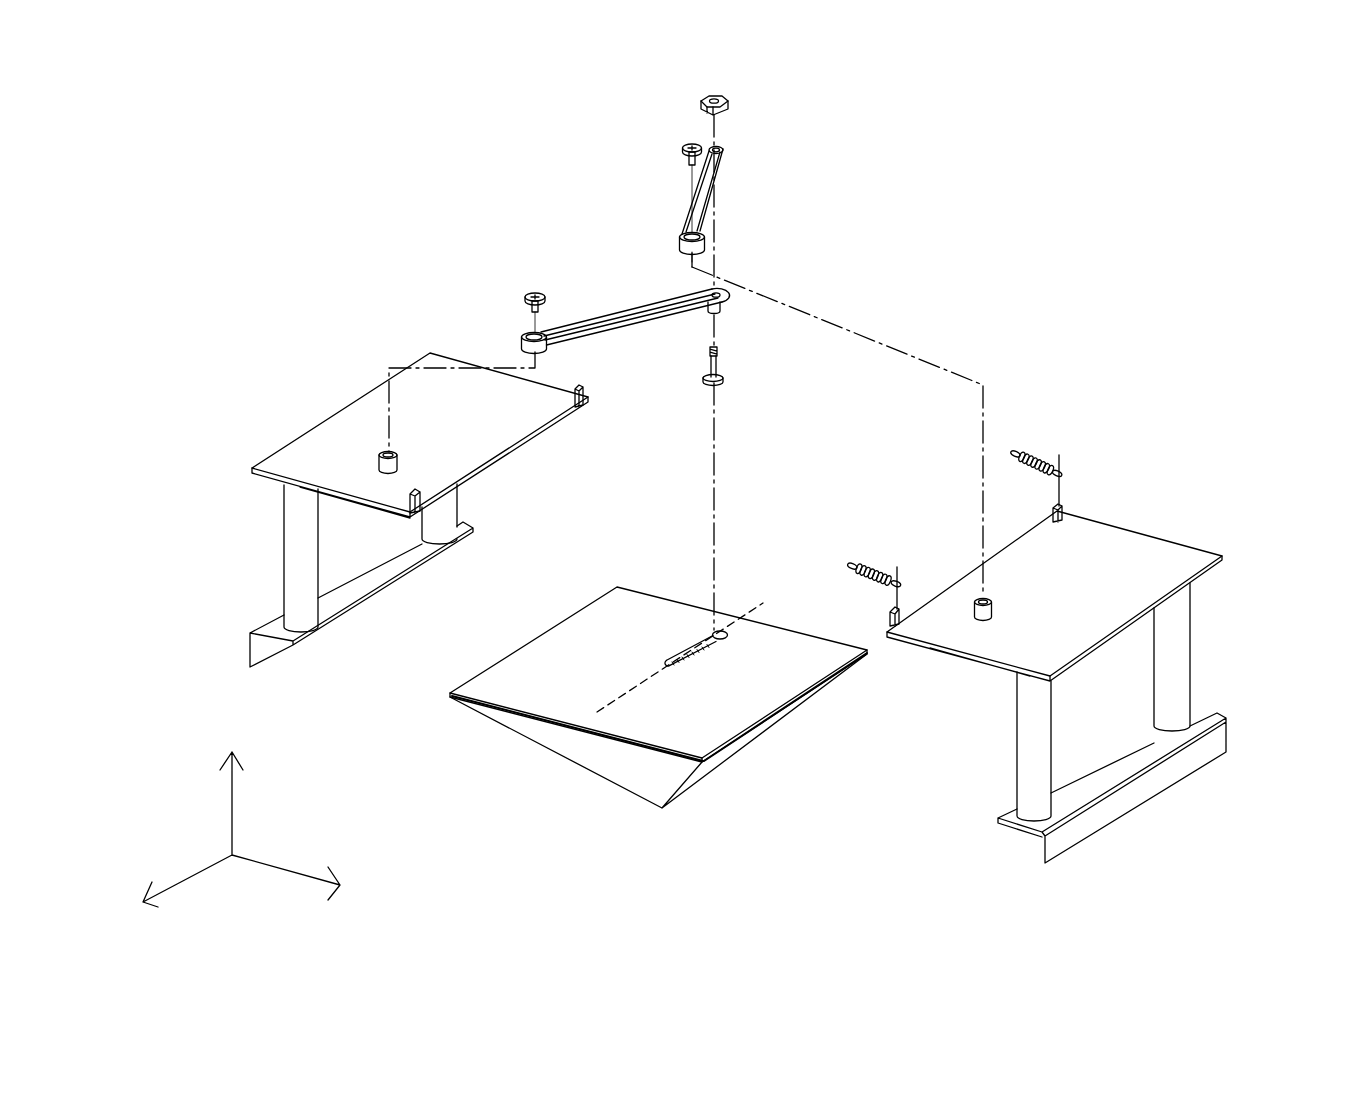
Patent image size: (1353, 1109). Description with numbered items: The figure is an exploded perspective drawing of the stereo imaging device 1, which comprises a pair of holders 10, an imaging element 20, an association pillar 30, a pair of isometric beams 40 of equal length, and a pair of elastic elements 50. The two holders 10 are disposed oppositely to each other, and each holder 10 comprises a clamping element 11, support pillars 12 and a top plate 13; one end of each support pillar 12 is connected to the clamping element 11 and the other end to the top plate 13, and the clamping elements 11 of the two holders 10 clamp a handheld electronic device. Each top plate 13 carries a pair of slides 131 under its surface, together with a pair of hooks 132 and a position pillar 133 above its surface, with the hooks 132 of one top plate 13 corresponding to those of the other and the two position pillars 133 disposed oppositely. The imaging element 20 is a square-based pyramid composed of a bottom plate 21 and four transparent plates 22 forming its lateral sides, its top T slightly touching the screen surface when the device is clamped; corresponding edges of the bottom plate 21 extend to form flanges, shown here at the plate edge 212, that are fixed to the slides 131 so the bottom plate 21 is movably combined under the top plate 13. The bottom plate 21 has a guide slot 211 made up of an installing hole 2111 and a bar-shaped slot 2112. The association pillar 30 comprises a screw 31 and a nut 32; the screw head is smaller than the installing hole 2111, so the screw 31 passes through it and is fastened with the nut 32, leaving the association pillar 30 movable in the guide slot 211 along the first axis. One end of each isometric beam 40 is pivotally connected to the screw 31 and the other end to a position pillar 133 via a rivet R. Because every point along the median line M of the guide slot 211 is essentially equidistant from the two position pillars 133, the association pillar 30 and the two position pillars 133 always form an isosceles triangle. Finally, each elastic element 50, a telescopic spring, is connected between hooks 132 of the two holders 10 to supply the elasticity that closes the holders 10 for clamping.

The stereo imaging device 1 is at (278, 277).
The holder 10 is at (158, 478).
The clamping element 11 is at (253, 652).
The support pillar 12 is at (284, 566).
The top plate 13 is at (277, 483).
The slide 131 is at (430, 522).
The hook 132 is at (409, 498).
The position pillar 133 is at (379, 458).
The imaging element 20 is at (371, 705).
The bottom plate 21 is at (492, 690).
The guide slot 211 is at (649, 578).
The installing hole 2111 is at (690, 584).
The slot 2112 is at (676, 645).
The plate edge 212 is at (662, 752).
The transparent plate 22 is at (563, 743).
The association pillar 30 is at (813, 130).
The screw 31 is at (724, 380).
The nut 32 is at (728, 112).
The isometric beam 40 is at (685, 218).
The elastic element 50 is at (865, 566).
The rivet R is at (683, 149).
The median line M is at (691, 644).
The top T is at (664, 808).